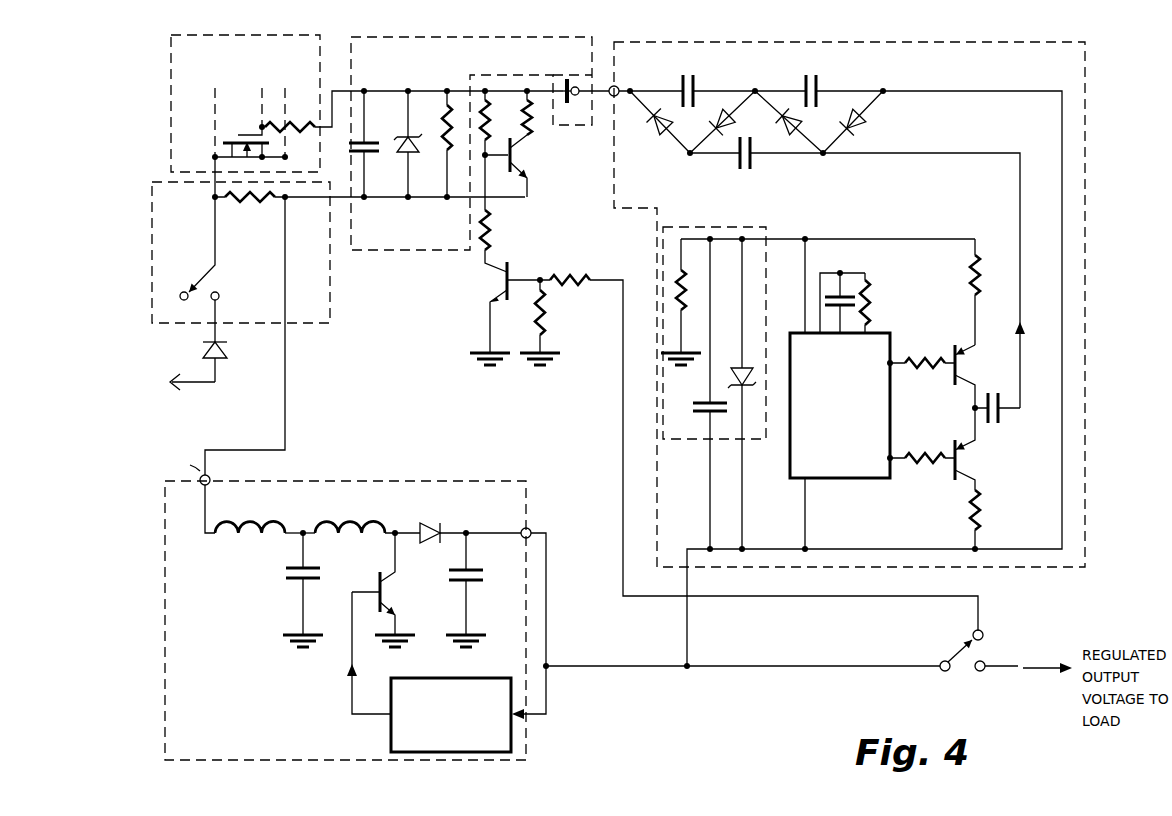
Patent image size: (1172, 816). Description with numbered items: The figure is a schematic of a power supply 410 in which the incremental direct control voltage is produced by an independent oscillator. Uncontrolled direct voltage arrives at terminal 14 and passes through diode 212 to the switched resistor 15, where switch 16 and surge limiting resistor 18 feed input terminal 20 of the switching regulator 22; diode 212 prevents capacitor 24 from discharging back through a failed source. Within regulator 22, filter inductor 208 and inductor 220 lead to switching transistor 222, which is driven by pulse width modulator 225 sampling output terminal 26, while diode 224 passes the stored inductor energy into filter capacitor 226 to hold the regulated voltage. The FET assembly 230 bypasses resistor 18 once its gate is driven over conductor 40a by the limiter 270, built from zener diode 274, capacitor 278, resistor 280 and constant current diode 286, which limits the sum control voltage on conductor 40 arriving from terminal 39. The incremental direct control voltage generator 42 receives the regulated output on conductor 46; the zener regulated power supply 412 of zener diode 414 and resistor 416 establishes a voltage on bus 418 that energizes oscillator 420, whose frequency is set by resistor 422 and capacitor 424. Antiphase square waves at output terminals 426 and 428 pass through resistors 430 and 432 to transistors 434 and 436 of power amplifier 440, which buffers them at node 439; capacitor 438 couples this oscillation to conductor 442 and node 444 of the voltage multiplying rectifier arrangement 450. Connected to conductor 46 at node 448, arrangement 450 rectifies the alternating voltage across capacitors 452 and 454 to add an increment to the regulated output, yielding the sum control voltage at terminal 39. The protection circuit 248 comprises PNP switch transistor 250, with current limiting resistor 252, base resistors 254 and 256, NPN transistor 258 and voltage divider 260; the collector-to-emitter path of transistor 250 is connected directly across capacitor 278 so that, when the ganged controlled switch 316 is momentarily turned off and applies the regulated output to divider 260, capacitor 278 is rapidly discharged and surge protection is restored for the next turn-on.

The FET assembly 230 is at (170, 100).
The conductor 40a is at (330, 128).
The switched resistor 15 is at (330, 284).
The surge limiting resistor 18 is at (250, 200).
The switch 16 is at (215, 274).
The diode 212 is at (226, 345).
The uncontrolled voltage terminal 14 is at (170, 372).
The limiter 270 is at (450, 242).
The capacitor 278 is at (373, 142).
The zener diode 274 is at (406, 148).
The resistor 280 is at (446, 146).
The resistor 254 is at (480, 88).
The current limiting resistor 252 is at (528, 136).
The PNP switch transistor 250 is at (524, 162).
The protection circuit 248 is at (548, 226).
The resistor 256 is at (500, 240).
The NPN transistor 258 is at (498, 285).
The voltage divider 260 is at (596, 324).
The constant current diode 286 is at (578, 86).
The conductor 40 is at (607, 108).
The output terminal 39 is at (612, 84).
The incremental direct control voltage generator 42 is at (1060, 579).
The conductor 46 is at (976, 94).
The voltage multiplying rectifier arrangement 450 is at (785, 72).
The capacitor 454 is at (695, 92).
The capacitor 452 is at (821, 92).
The node 448 is at (885, 91).
The node 444 is at (826, 153).
The conductor 442 is at (1017, 183).
The zener regulated power supply 412 is at (766, 439).
The resistor 416 is at (691, 290).
The zener diode 414 is at (740, 365).
The oscillator 420 is at (864, 478).
The capacitor 424 is at (837, 276).
The resistor 422 is at (869, 298).
The bus 418 is at (913, 239).
The transistor 434 is at (963, 354).
The resistor 430 is at (938, 368).
The output terminal 426 is at (908, 358).
The power amplifier 440 is at (954, 416).
The capacitor 438 is at (997, 418).
The node 439 is at (978, 410).
The transistor 436 is at (965, 454).
The output terminal 428 is at (896, 458).
The resistor 432 is at (934, 464).
The controlled switch 316 is at (964, 654).
The power supply 410 is at (772, 686).
The switching regulator 22 is at (490, 490).
The input terminal 20 is at (209, 477).
The filter inductor 208 is at (254, 534).
The inductor 220 is at (344, 534).
The diode 224 is at (436, 534).
The capacitor 24 is at (296, 580).
The switching transistor 222 is at (386, 593).
The filter capacitor 226 is at (476, 588).
The output terminal 26 is at (528, 532).
The pulse width modulator 225 is at (445, 678).